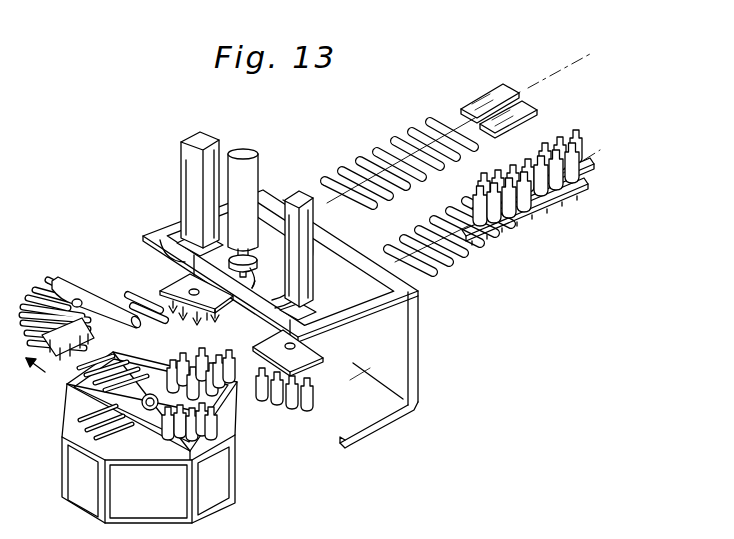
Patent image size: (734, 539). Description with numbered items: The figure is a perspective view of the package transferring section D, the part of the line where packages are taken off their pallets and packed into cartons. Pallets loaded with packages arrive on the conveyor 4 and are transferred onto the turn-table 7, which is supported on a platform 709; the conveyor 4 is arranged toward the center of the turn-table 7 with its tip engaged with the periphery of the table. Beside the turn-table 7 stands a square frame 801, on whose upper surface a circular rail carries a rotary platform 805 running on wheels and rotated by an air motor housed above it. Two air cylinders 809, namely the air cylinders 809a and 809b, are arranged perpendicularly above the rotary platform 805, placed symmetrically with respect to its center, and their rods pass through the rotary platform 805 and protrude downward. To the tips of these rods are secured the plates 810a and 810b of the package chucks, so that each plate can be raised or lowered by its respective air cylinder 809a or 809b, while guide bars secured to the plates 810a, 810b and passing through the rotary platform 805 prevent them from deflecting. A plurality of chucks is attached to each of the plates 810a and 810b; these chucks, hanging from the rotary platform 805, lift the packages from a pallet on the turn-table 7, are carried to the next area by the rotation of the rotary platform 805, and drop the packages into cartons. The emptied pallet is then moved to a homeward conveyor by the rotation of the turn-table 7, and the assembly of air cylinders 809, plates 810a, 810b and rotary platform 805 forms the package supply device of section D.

The package-transferring section D is at (139, 204).
The conveyor 4 is at (462, 253).
The turn-table 7 is at (66, 408).
The platform 709 is at (238, 466).
The square frame 801 is at (422, 322).
The rotary platform 805 is at (318, 300).
The cylinder 809 is at (243, 213).
The air cylinder 809a is at (330, 243).
The air cylinder 809b is at (188, 172).
The plate 810a is at (320, 353).
The plate 810b is at (180, 276).